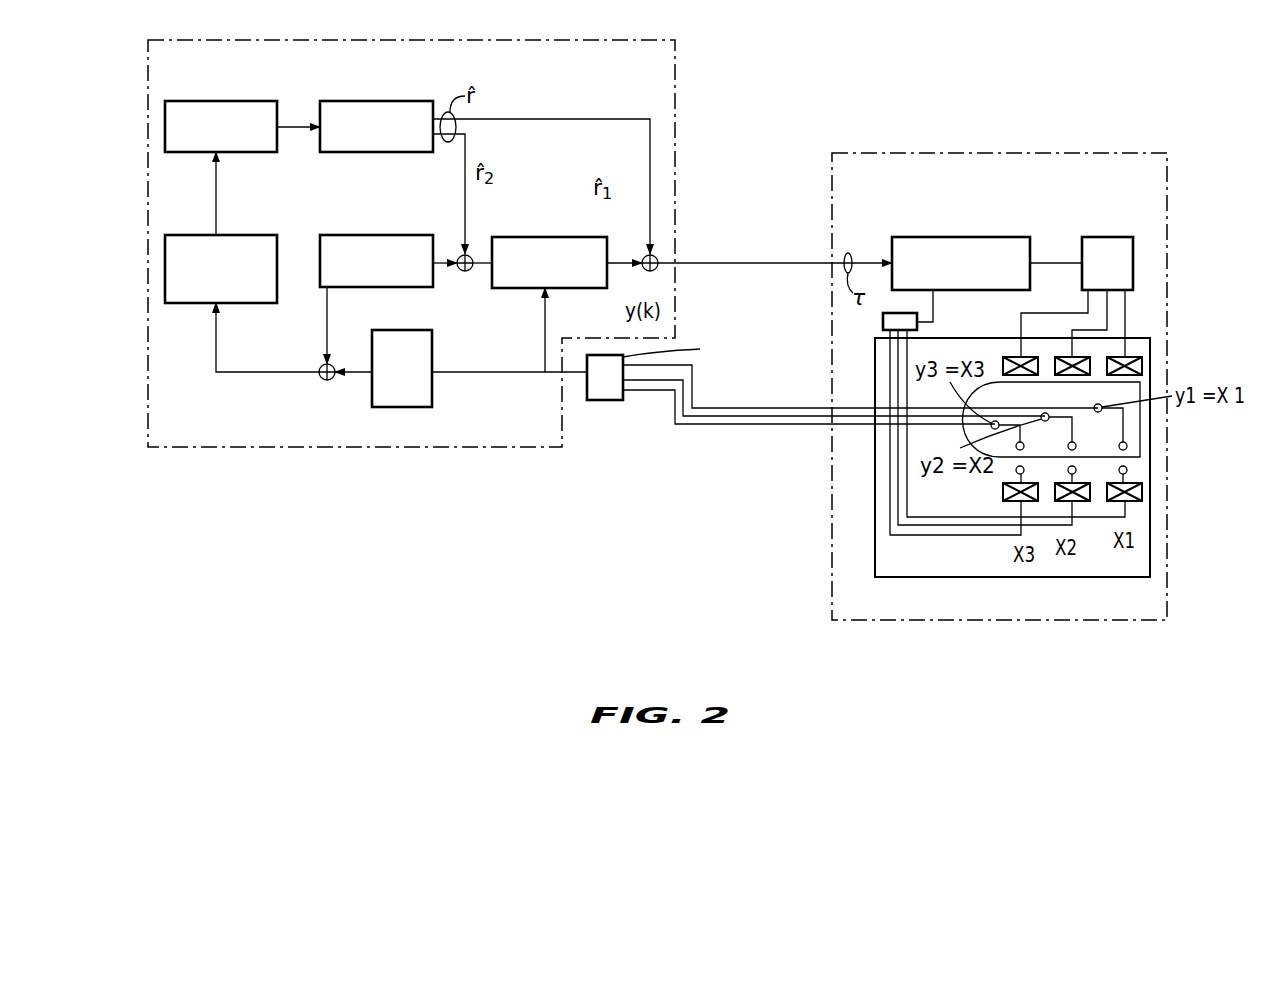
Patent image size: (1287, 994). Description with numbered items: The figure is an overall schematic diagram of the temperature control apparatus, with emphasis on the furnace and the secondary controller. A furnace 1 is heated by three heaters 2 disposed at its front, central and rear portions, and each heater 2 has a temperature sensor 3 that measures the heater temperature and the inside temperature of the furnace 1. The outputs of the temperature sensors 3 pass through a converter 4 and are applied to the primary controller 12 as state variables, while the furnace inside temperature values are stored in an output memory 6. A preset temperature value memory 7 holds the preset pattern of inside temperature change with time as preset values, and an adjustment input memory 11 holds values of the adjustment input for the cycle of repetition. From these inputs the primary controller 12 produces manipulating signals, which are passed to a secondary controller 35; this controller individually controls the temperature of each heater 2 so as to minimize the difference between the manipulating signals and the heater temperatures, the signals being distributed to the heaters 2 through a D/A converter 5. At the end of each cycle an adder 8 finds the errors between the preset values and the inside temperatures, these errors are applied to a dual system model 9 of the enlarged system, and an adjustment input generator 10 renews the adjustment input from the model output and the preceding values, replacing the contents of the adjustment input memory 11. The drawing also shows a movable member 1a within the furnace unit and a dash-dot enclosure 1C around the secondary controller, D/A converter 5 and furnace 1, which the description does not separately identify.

The furnace 1 is at (1135, 336).
The movable member 1a is at (1150, 432).
The remote controller enclosure 1C is at (978, 153).
The heaters 2 is at (1037, 376).
The temperature sensors 3 is at (1024, 447).
The converter 4 is at (619, 400).
The D/A converter 5 is at (1105, 237).
The output memory 6 is at (397, 408).
The preset temperature value memory 7 is at (349, 235).
The adder 8 is at (327, 380).
The dual system model 9 is at (205, 304).
The adjustment input generator 10 is at (208, 101).
The adjustment input memory 11 is at (358, 101).
The primary controller 12 is at (556, 290).
The secondary controller 35 is at (919, 237).